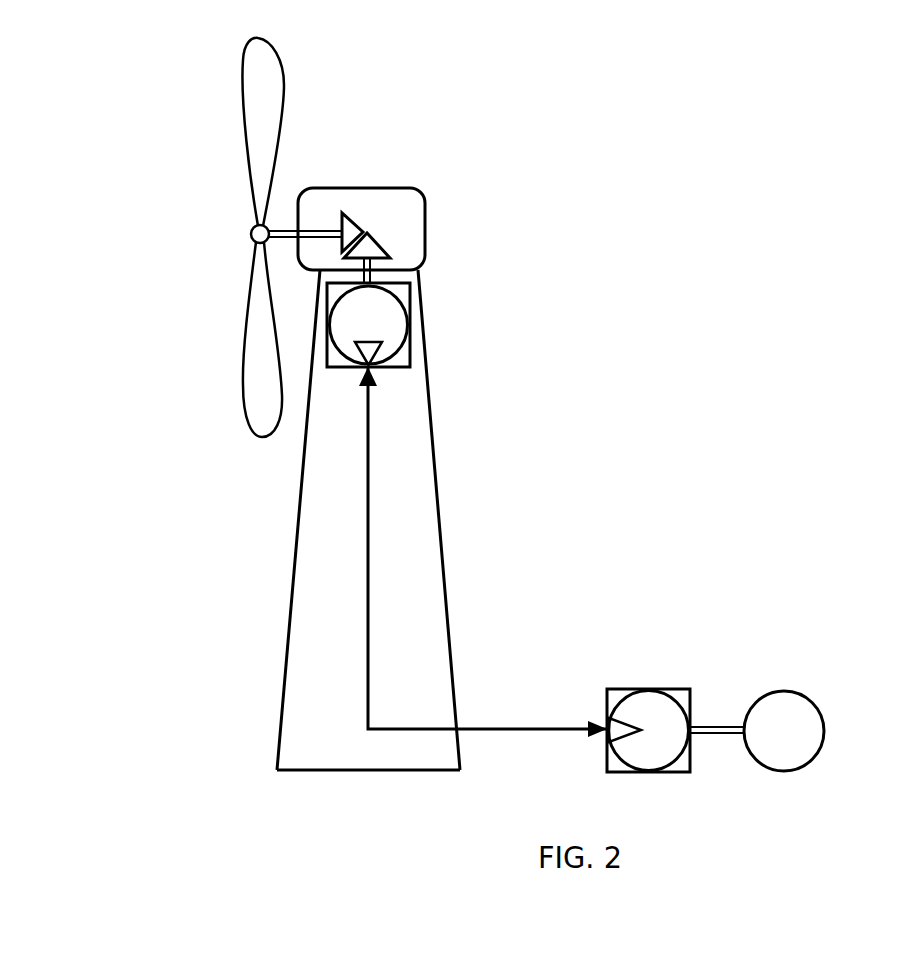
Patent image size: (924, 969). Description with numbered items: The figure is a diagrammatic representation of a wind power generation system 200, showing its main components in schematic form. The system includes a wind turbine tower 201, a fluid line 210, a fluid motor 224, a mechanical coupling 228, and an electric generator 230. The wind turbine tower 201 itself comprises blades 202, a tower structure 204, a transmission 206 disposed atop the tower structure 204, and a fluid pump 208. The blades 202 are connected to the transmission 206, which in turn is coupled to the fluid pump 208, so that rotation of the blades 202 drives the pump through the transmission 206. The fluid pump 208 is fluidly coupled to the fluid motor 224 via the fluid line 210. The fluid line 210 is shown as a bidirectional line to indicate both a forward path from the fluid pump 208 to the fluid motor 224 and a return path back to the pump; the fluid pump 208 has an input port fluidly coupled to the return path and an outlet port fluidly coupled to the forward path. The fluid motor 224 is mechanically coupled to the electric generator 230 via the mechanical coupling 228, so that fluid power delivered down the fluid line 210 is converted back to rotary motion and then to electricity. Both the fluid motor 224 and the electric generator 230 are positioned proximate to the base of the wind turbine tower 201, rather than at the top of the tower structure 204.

The wind power generation system 200 is at (740, 239).
The wind turbine tower 201 is at (180, 354).
The blades 202 is at (282, 120).
The tower structure 204 is at (440, 538).
The transmission 206 is at (380, 236).
The fluid pump 208 is at (410, 343).
The fluid line 210 is at (478, 722).
The fluid motor 224 is at (632, 688).
The mechanical coupling 228 is at (700, 722).
The electric generator 230 is at (782, 690).